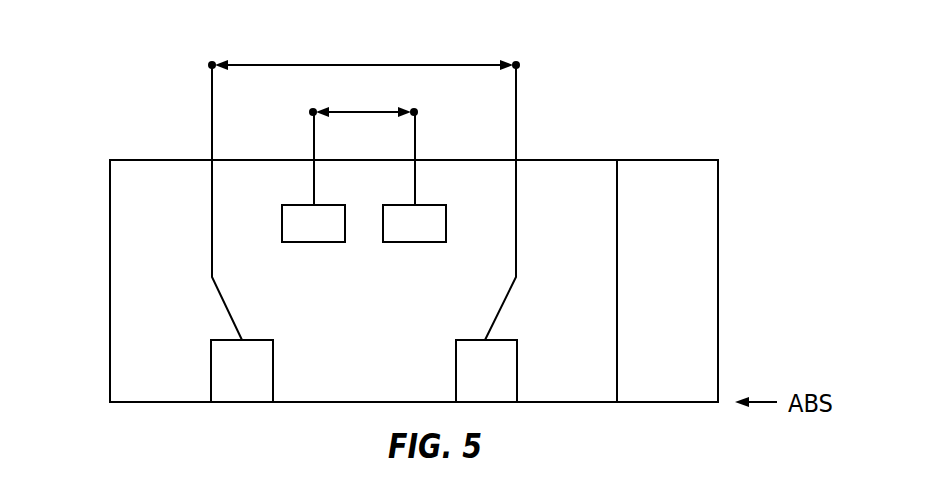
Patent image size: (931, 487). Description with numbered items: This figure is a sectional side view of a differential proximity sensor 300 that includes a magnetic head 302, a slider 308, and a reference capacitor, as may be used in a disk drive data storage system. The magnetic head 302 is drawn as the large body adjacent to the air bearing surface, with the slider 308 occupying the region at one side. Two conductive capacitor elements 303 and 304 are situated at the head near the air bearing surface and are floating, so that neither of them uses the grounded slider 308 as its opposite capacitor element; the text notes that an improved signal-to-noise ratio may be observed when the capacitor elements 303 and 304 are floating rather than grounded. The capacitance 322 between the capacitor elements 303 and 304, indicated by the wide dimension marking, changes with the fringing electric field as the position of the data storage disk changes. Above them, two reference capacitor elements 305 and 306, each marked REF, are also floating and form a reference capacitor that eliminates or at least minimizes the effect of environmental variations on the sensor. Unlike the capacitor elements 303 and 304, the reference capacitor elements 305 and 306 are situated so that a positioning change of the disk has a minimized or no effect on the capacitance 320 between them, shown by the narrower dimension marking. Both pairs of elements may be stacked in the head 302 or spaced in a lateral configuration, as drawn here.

The differential proximity sensor 300 is at (135, 62).
The magnetic head 302 is at (160, 160).
The capacitor element 303 is at (255, 340).
The capacitor element 304 is at (474, 340).
The reference capacitor element 305 is at (297, 205).
The reference capacitor element 306 is at (430, 205).
The slider 308 is at (668, 172).
The capacitance 320 is at (362, 112).
The capacitance 322 is at (362, 65).